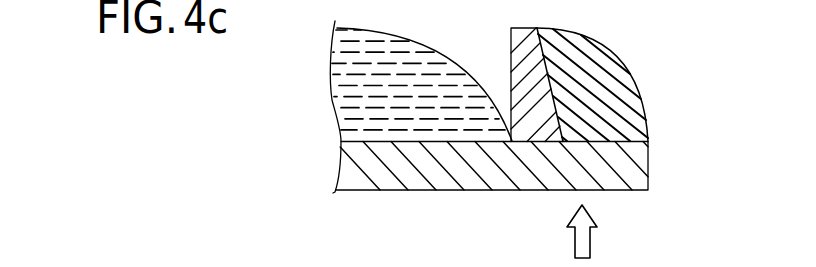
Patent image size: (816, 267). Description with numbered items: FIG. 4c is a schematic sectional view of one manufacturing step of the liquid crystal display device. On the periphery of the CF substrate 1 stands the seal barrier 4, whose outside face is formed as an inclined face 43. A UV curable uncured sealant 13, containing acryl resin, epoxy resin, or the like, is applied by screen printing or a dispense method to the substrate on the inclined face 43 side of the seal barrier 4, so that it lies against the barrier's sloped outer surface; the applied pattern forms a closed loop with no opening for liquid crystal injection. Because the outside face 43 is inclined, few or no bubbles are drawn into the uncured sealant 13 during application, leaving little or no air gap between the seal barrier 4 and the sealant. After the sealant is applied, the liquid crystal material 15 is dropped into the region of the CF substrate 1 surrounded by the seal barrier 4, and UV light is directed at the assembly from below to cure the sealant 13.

The CF substrate 1 is at (636, 160).
The seal barrier 4 is at (523, 43).
The inclined face 43 is at (547, 72).
The uncured sealant 13 is at (626, 79).
The liquid crystal material 15 is at (348, 105).
The ultraviolet light irradiation UV is at (591, 242).